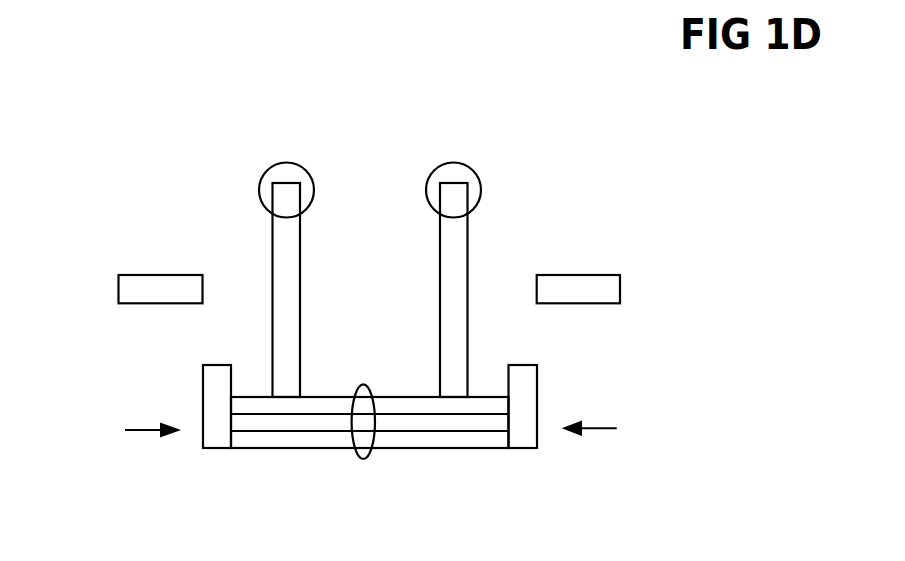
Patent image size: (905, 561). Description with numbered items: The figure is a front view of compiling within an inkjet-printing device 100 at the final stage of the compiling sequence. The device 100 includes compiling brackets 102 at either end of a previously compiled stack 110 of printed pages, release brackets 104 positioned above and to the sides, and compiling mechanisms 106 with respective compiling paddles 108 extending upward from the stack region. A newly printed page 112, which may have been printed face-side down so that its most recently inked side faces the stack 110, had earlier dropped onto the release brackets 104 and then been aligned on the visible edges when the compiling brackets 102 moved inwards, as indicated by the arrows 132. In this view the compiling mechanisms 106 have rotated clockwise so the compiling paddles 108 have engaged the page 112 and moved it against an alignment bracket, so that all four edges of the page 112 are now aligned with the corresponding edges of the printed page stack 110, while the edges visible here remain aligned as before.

The inkjet-printing device 100 is at (89, 156).
The compiling brackets 102 is at (203, 398).
The release brackets 104 is at (118, 283).
The compiling mechanisms 106 is at (285, 163).
The compiling paddles 108 is at (300, 268).
The stack of printed pages 110 is at (353, 437).
The page 112 is at (487, 397).
The arrows 132 is at (142, 430).